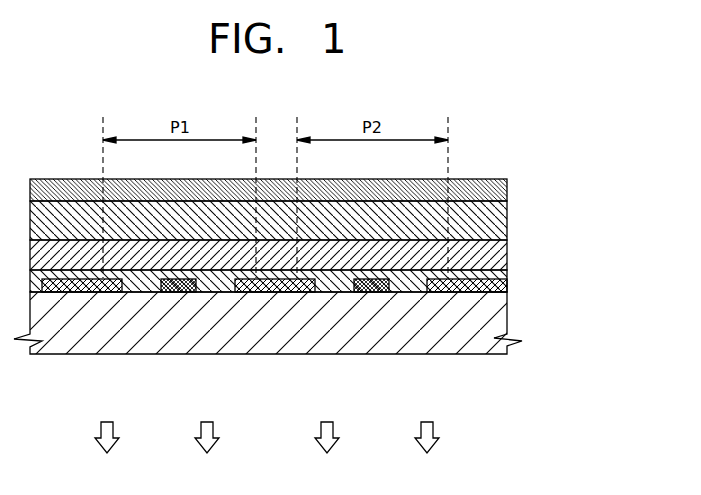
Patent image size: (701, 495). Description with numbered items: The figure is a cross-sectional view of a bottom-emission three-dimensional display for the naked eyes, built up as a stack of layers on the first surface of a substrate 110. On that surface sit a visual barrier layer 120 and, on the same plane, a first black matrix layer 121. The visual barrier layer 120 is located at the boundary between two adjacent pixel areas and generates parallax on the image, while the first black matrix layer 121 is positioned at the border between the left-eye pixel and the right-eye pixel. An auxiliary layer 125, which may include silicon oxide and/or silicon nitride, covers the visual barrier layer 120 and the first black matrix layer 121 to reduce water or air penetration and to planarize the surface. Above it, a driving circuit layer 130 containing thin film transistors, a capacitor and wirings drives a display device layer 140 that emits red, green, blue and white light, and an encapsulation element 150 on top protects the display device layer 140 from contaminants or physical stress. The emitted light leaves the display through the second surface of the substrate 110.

The substrate 110 is at (496, 319).
The visual barrier layer 120 is at (100, 292).
The first black matrix layer 121 is at (180, 292).
The auxiliary layer 125 is at (500, 278).
The driving circuit layer 130 is at (503, 251).
The display device layer 140 is at (496, 221).
The encapsulation element 150 is at (505, 190).